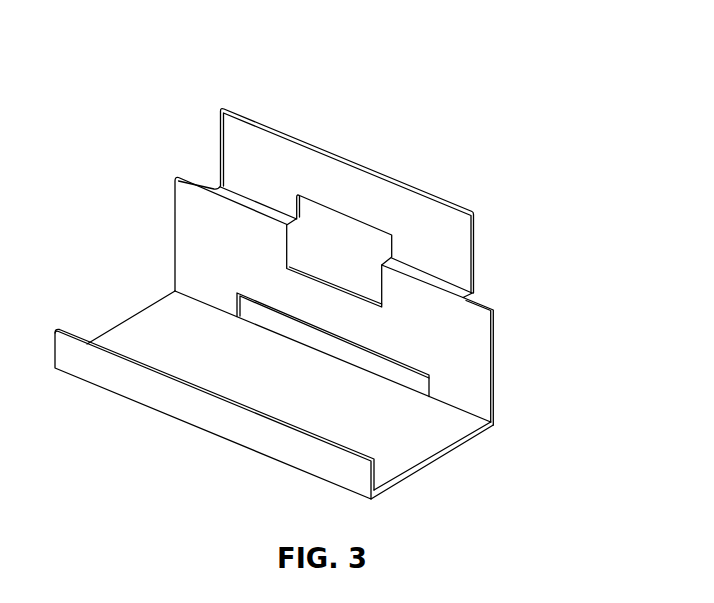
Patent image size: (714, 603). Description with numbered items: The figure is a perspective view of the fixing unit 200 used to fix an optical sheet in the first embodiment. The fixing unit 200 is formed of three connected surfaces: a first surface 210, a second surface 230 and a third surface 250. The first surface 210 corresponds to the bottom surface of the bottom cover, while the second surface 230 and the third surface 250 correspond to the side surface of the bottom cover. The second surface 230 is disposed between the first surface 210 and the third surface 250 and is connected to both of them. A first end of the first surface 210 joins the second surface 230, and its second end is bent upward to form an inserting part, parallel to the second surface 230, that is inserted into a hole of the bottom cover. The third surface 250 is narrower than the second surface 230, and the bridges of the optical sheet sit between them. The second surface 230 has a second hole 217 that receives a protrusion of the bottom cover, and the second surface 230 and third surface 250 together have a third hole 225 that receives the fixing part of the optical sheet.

The fixing unit 200 is at (386, 30).
The first surface 210 is at (412, 440).
The second hole 217 is at (261, 316).
The third hole 225 is at (309, 250).
The second surface 230 is at (460, 325).
The third surface 250 is at (407, 210).